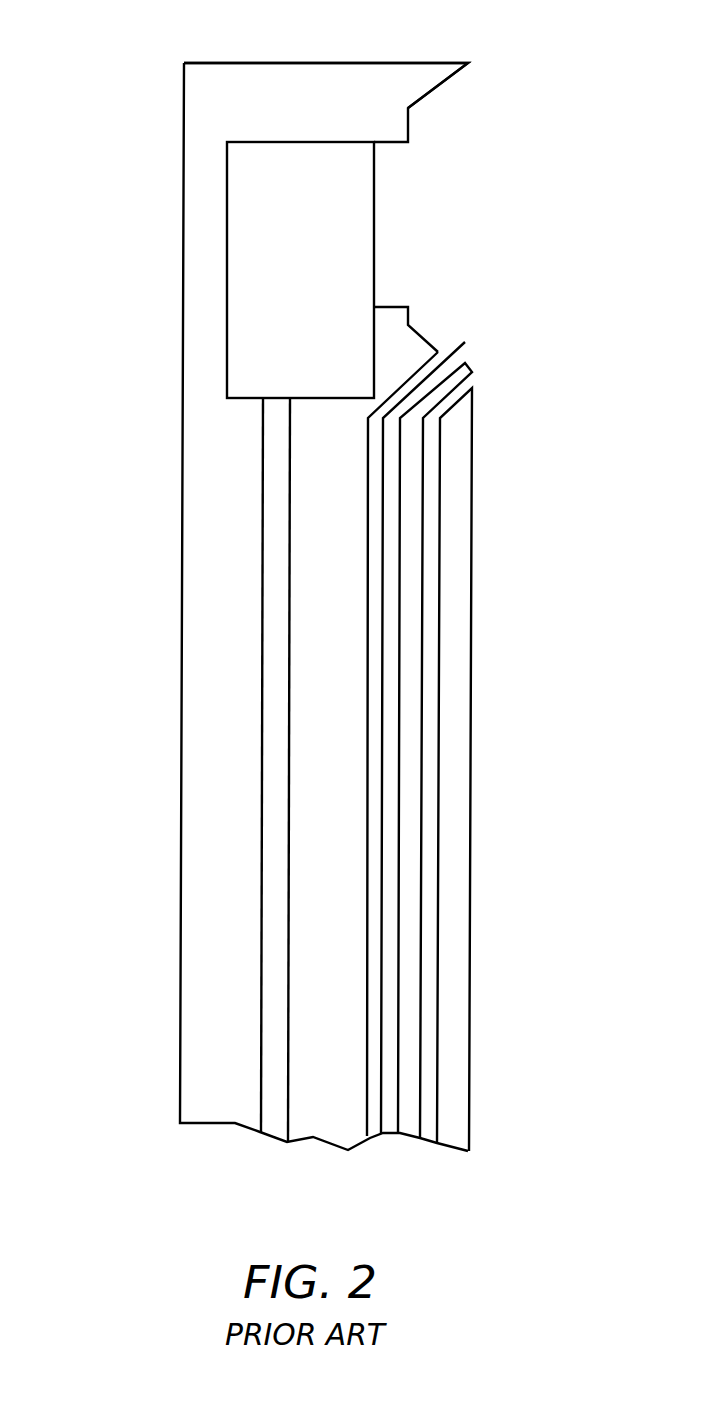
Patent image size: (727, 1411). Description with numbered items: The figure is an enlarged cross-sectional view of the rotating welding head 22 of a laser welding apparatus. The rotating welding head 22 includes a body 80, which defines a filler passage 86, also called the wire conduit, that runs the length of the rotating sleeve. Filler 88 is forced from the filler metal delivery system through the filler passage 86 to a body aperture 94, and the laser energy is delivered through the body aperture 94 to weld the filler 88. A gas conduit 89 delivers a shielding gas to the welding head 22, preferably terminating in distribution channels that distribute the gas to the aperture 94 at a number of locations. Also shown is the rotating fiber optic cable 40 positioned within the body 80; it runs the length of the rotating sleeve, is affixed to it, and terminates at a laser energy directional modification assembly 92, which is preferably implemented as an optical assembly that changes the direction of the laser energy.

The rotating welding head 22 is at (360, 50).
The body 80 is at (183, 233).
The laser energy directional modification assembly 92 is at (308, 275).
The rotating fiber optic cable 40 is at (262, 777).
The body aperture 94 is at (473, 630).
The filler 88 is at (452, 348).
The gas conduit 89 is at (430, 575).
The filler passage 86 is at (473, 706).